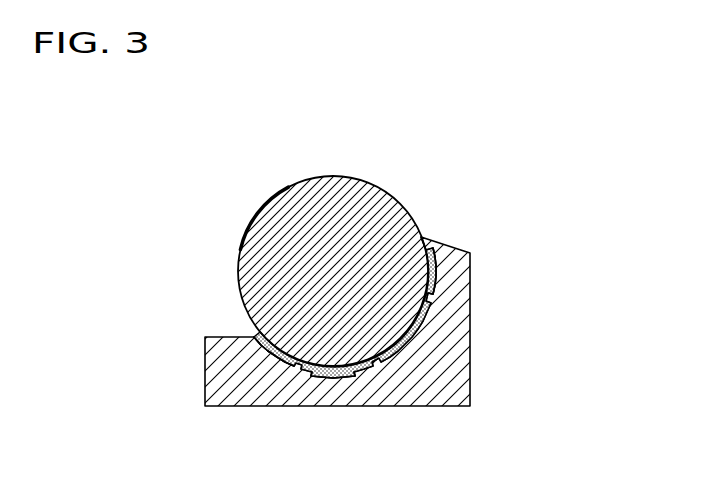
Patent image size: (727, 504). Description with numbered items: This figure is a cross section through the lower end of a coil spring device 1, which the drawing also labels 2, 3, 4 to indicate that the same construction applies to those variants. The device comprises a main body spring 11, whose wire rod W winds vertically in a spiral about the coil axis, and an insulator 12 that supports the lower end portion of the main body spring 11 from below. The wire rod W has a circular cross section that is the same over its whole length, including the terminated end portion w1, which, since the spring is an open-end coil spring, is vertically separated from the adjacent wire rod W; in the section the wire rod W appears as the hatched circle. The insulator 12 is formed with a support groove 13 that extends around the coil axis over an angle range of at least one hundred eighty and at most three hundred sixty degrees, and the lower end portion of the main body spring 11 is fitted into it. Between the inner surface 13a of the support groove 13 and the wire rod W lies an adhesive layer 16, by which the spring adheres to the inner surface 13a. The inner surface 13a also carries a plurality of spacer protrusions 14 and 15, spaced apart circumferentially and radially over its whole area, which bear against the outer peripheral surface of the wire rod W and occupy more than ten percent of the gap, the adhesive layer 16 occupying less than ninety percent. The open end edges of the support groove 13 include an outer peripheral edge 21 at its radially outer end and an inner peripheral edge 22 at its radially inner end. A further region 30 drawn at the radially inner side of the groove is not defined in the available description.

The coil spring device 1 is at (395, 279).
The bearing device 2 is at (356, 279).
The bearing device 3 is at (356, 279).
The bearing device 4 is at (356, 279).
The main body spring 11 is at (334, 222).
The wire rod W is at (330, 229).
The terminated end portion w1 is at (283, 186).
The insulator 12 is at (366, 284).
The support groove 13 is at (346, 326).
The inner surface 13a is at (283, 367).
The spacer protrusion 14 is at (263, 345).
The spacer protrusion 15 is at (346, 364).
The adhesive layer 16 is at (383, 362).
The outer peripheral edge 21 is at (257, 337).
The inner peripheral edge 22 is at (428, 238).
The side coating portion 30 is at (430, 272).